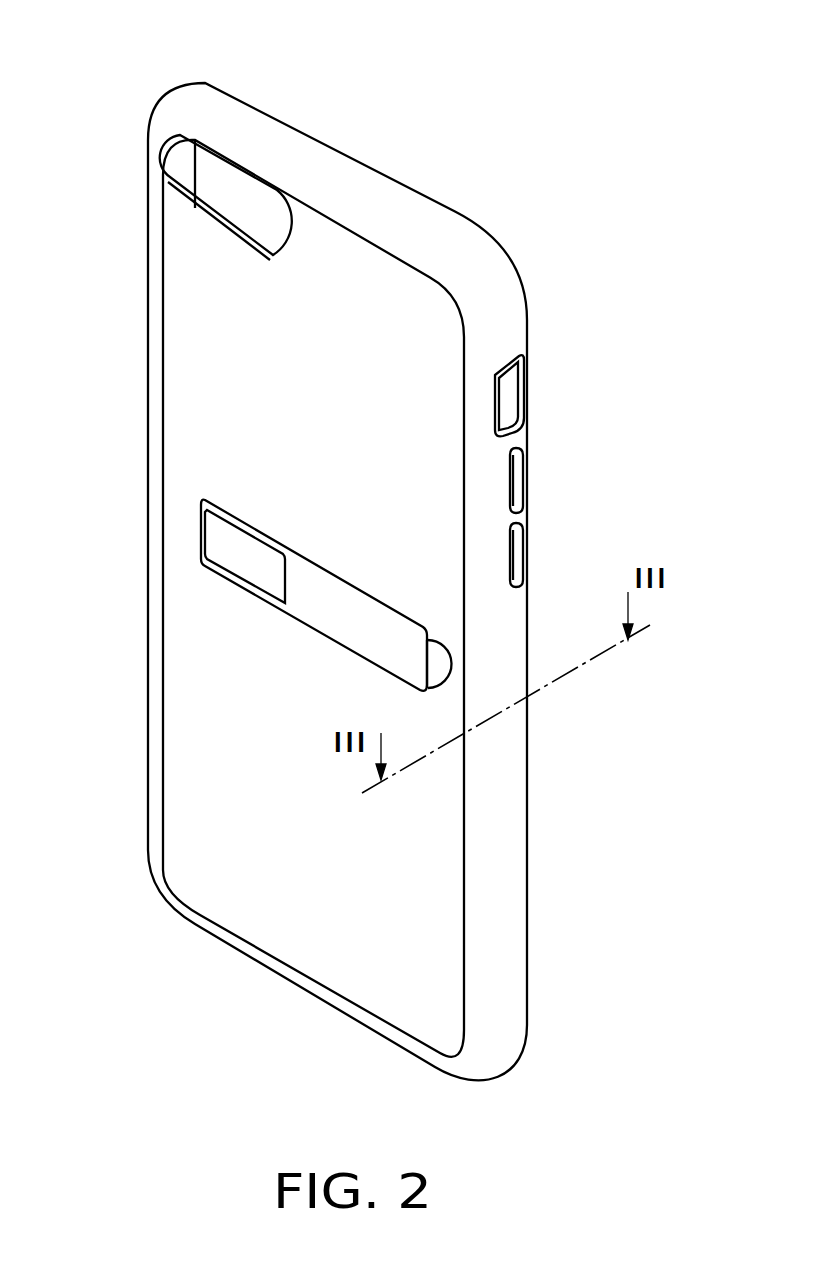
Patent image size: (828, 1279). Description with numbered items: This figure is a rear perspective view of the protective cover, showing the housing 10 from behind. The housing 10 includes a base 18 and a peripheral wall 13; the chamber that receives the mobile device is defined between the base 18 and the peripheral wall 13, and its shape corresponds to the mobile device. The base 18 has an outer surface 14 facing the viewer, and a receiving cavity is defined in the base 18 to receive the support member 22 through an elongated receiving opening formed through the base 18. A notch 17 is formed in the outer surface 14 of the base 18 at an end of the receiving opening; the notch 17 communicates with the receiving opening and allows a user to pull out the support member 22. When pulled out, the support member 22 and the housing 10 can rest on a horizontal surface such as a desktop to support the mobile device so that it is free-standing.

The housing 10 is at (475, 178).
The peripheral wall 13 is at (510, 795).
The outer surface 14 is at (197, 335).
The notch 17 is at (440, 667).
The base 18 is at (202, 255).
The support member 22 is at (332, 612).